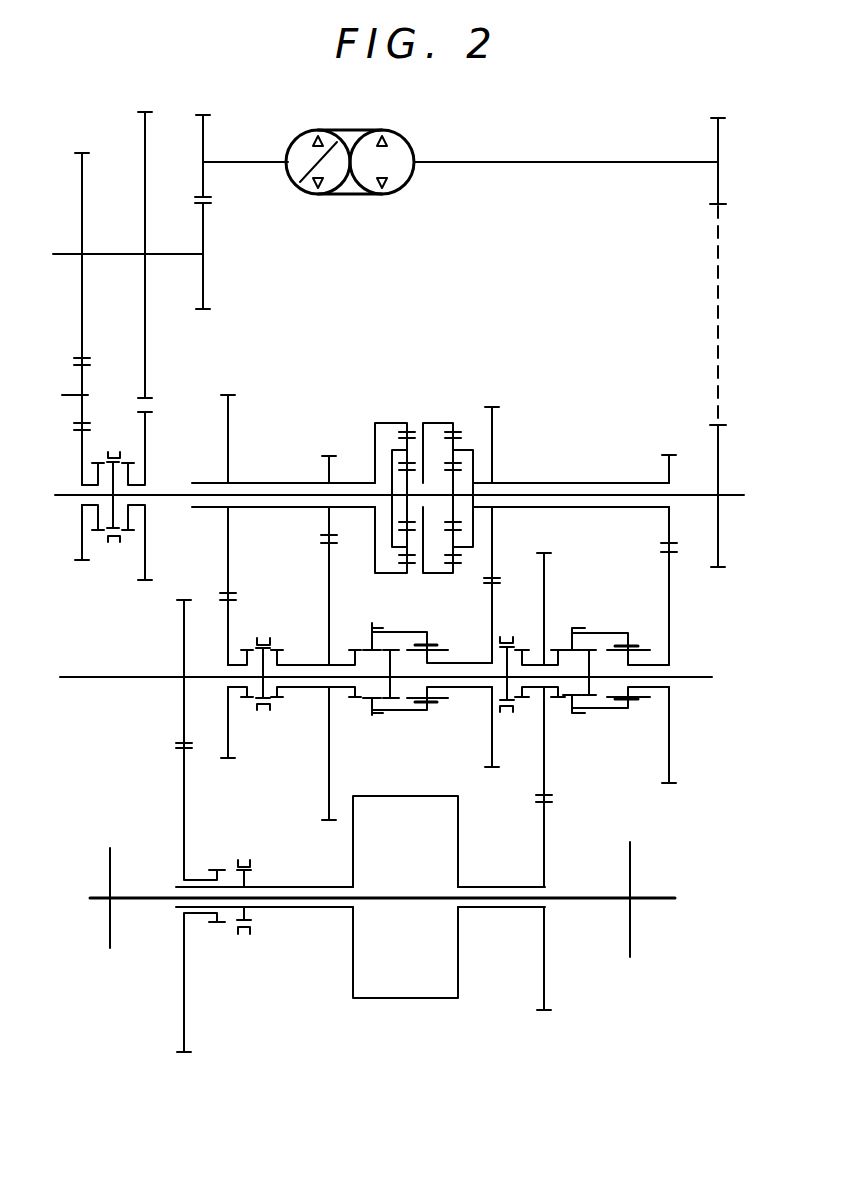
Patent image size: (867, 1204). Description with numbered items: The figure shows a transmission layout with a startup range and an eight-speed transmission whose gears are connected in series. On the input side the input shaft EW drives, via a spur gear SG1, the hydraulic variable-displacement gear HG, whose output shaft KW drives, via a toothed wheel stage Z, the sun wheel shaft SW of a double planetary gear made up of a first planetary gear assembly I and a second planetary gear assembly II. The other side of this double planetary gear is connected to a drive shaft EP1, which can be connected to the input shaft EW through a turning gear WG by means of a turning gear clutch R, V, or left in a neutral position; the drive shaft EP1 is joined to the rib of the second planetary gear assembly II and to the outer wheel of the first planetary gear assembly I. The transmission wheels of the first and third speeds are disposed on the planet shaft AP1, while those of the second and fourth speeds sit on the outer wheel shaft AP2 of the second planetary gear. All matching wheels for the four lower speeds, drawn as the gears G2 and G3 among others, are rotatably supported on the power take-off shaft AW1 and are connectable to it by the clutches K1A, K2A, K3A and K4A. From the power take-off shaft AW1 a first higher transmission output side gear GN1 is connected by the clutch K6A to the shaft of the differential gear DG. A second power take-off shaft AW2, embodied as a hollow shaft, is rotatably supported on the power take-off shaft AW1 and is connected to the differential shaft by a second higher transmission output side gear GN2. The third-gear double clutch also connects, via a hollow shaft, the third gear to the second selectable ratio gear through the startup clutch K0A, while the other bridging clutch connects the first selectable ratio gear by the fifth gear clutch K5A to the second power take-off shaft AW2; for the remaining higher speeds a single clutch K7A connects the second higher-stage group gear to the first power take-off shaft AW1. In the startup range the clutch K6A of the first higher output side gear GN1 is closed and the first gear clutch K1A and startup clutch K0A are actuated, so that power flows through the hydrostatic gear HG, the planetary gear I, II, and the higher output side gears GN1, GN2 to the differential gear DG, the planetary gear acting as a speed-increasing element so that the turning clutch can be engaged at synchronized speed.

The input shaft EW is at (62, 254).
The spur gear SG1 is at (205, 218).
The hydraulic variable-displacement gear HG is at (357, 194).
The output shaft KW is at (500, 162).
The toothed wheel stage Z is at (718, 355).
The sun wheel shaft SW is at (734, 496).
The drive shaft EP1 is at (163, 495).
The outer wheel shaft of the second planetary gear AP2 is at (260, 483).
The planet shaft AP1 is at (605, 463).
The second planetary gear assembly II is at (407, 409).
The first planetary gear assembly I is at (453, 409).
The turning gear WG is at (118, 483).
The turning gear clutch R is at (98, 532).
The turning gear clutch V is at (128, 532).
The first higher transmission output side gear GN1 is at (184, 630).
The second higher transmission output side gear GN2 is at (544, 585).
The clutch K2A is at (277, 648).
The clutch K4A is at (245, 700).
The startup clutch K0A is at (353, 650).
The clutch K3A is at (393, 648).
The gear G2 is at (329, 758).
The gear G3 is at (492, 725).
The second power take-off shaft AW2 is at (535, 650).
The single clutch K7A is at (527, 700).
The 1st gear clutch K1A is at (590, 648).
The 5th gear clutch K5A is at (558, 700).
The power take-off shaft AW1 is at (690, 677).
The clutch K6A is at (215, 875).
The differential gear DG is at (420, 851).